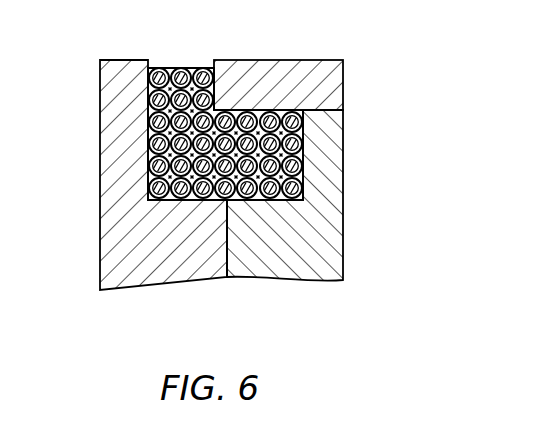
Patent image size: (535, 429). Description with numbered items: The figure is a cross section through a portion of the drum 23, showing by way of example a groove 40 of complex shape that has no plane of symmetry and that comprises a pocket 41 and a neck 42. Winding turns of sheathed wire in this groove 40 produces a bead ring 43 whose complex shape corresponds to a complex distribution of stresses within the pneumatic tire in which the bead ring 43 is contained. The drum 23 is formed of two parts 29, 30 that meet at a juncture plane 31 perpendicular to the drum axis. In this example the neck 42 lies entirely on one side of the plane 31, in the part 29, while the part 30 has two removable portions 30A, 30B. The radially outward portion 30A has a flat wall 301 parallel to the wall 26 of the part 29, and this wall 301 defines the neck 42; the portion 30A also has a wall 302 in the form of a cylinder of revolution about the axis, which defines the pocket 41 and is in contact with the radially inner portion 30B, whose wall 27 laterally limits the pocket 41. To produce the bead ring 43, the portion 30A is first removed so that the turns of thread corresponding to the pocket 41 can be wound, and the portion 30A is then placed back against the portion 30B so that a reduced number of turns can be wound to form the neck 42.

The drum 23 is at (343, 202).
The wall 26 is at (150, 191).
The wall 27 is at (303, 142).
The part 29 is at (100, 270).
The part 30 is at (343, 262).
The removable portion 30A is at (313, 60).
The removable portion 30B is at (343, 234).
The juncture plane 31 is at (227, 262).
The groove 40 is at (150, 132).
The pocket 41 is at (303, 178).
The neck 42 is at (214, 84).
The bead ring 43 is at (150, 183).
The flat wall 301 is at (214, 93).
The wall 302 is at (258, 110).